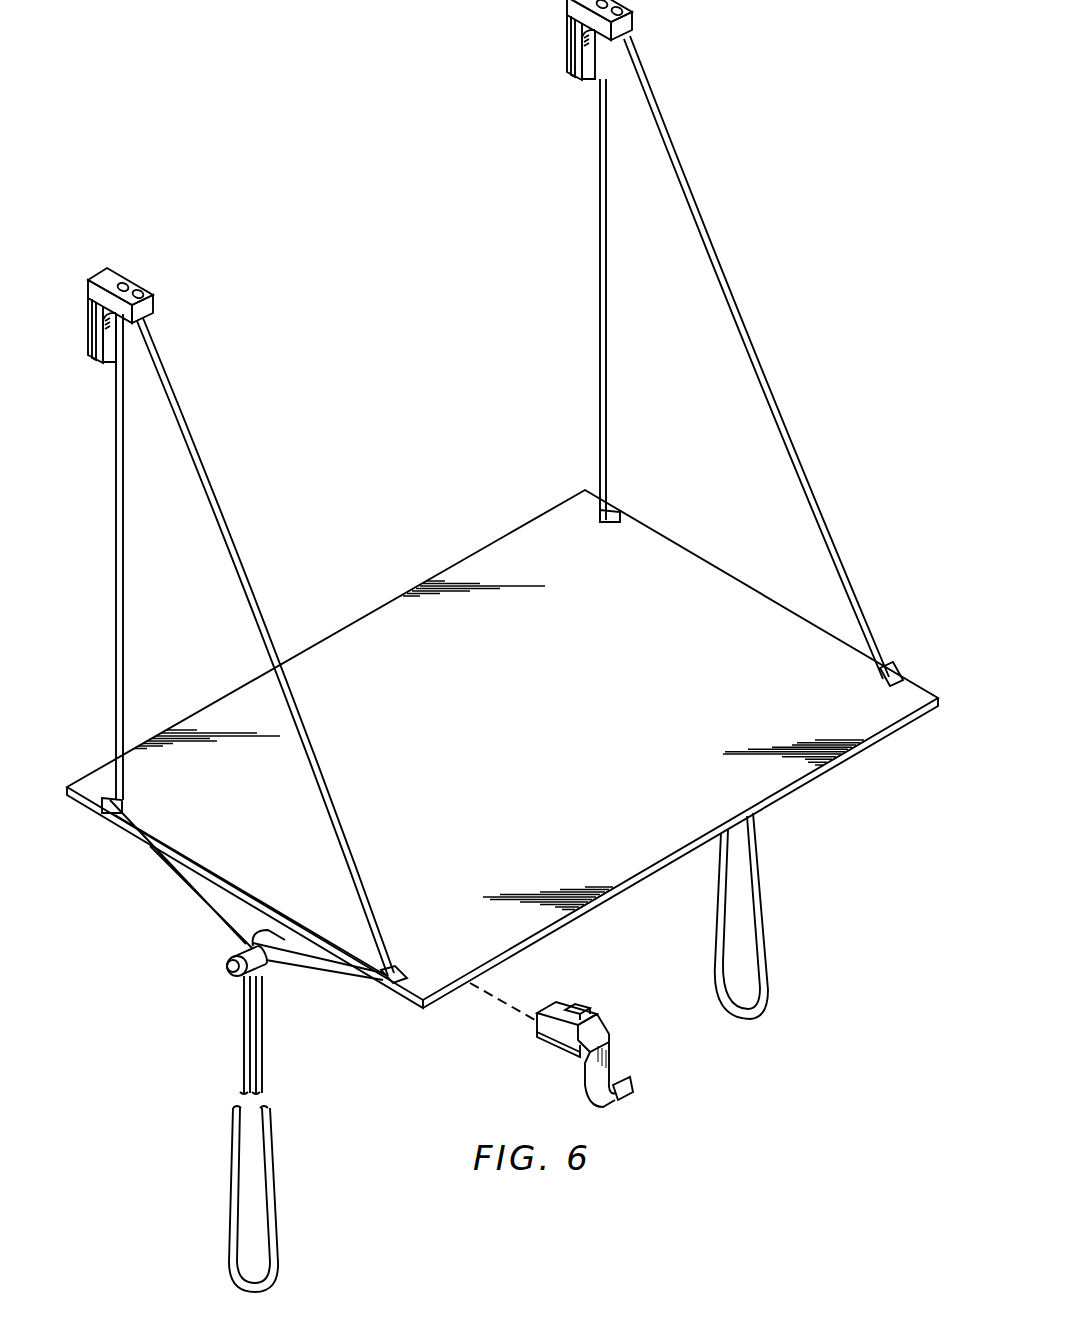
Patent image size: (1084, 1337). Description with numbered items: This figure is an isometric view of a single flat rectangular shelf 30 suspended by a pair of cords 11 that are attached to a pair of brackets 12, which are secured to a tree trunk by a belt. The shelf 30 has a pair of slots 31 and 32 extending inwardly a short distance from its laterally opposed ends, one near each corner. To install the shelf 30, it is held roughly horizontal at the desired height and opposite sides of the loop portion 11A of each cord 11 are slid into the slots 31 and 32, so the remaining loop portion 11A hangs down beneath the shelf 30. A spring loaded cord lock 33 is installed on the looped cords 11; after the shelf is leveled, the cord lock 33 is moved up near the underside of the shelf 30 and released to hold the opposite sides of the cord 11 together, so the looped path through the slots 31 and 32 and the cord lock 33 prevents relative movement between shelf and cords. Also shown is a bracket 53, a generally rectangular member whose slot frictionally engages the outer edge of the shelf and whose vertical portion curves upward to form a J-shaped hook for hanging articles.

The cord 11 is at (607, 352).
The loop portion 11A is at (763, 928).
The bracket 12 is at (153, 292).
The shelf 30 is at (548, 742).
The slot 31 is at (615, 508).
The slot 32 is at (890, 668).
The cord lock 33 is at (277, 958).
The bracket 53 is at (617, 1069).